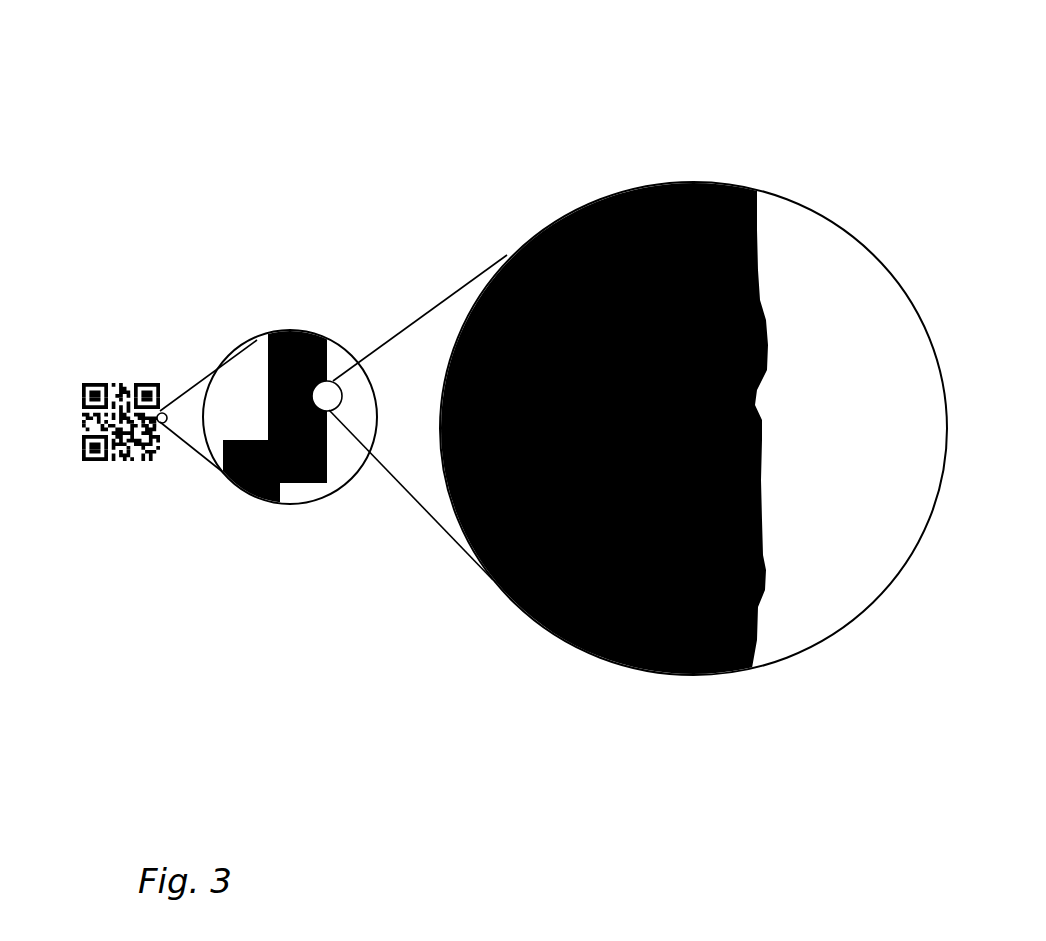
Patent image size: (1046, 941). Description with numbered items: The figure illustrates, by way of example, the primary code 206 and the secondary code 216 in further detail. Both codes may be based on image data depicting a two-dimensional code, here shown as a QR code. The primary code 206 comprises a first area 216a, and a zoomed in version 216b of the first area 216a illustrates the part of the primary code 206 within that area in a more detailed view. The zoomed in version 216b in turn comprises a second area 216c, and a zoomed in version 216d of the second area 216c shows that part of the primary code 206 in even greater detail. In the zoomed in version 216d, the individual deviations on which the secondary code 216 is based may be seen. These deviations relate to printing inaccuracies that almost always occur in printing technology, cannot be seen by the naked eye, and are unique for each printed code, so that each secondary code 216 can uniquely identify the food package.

The primary code 206 is at (170, 467).
The secondary code 216 is at (42, 84).
The first area 216a is at (163, 410).
The zoomed in version of the first area 216b is at (313, 493).
The second area 216c is at (333, 394).
The zoomed in version of the second area 216d is at (800, 639).